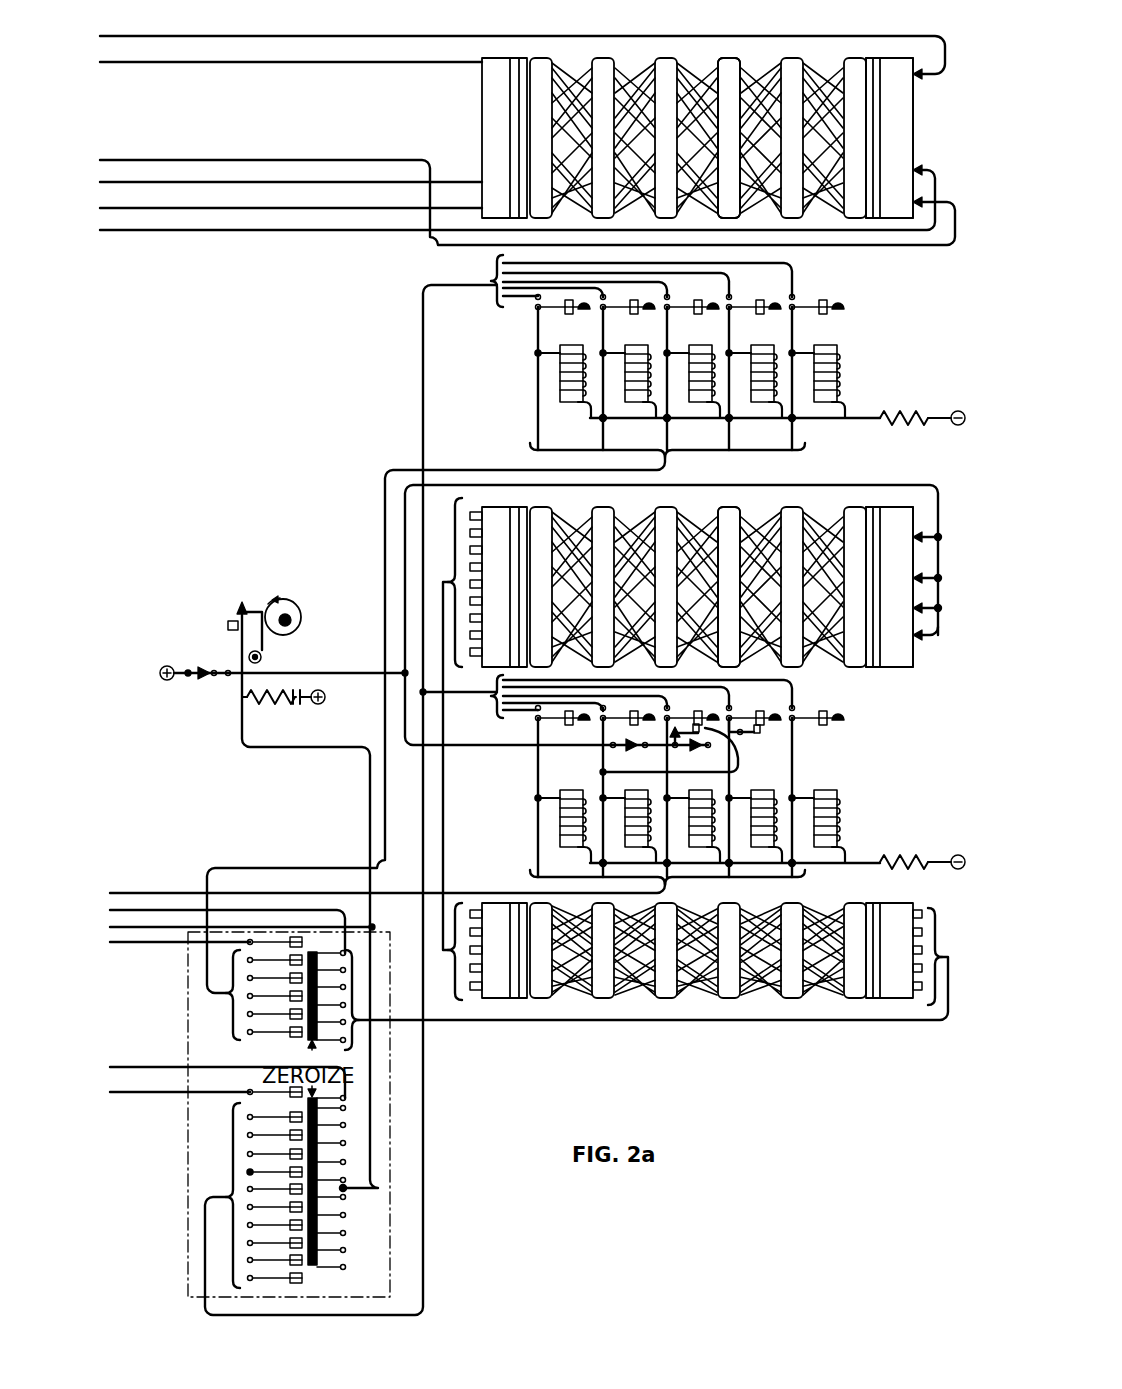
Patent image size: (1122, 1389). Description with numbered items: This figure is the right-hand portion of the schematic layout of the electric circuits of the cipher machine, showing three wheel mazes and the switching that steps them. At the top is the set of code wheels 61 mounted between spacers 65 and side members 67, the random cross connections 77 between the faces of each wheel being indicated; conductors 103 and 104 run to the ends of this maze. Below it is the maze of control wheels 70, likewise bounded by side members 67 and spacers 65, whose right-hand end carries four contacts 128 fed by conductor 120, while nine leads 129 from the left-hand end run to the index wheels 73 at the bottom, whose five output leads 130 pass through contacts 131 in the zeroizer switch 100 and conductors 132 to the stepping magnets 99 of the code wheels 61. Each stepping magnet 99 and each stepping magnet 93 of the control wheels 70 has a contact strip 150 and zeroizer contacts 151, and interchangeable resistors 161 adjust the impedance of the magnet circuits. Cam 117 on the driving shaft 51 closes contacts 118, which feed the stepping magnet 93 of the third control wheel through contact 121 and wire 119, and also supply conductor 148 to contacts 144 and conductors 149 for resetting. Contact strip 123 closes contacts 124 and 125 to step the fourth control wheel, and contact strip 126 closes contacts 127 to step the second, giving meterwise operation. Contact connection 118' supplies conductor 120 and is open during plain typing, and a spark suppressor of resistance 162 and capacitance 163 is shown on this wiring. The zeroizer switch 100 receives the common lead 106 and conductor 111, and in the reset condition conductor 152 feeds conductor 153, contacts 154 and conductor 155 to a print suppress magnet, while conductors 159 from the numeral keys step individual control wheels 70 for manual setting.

The conductors 104 is at (283, 36).
The conductor 103 is at (287, 62).
The random connections of code wheel contacts 77 is at (625, 70).
The spacer 65 is at (728, 68).
The code wheel 61 is at (755, 68).
The side member of basket 67 is at (852, 70).
The zeroizer contacts 151 is at (815, 303).
The contact strip 150 is at (830, 308).
The stepping magnet of code wheel 99 is at (835, 370).
The interchangeable resistor 161 is at (895, 418).
The control wheel 70 is at (760, 505).
The contacts at right hand end of control wheels 128 is at (935, 540).
The cam 117 is at (268, 600).
The contacts 118 is at (212, 637).
The contact connection 118' is at (177, 695).
The conductor 120 is at (405, 625).
The driving shaft 51 is at (276, 638).
The wire 119 is at (316, 673).
The resistance 162 is at (280, 703).
The capacitance 163 is at (297, 705).
The leads from control wheels 129 is at (443, 745).
The contact 121 is at (644, 743).
The contact strip 123 is at (700, 712).
The contacts 124 is at (738, 740).
The contacts 125 is at (708, 747).
The contact strip 126 is at (770, 724).
The contacts 127 is at (775, 732).
The stepping magnet of control wheel 93 is at (820, 796).
The index wheel 73 is at (850, 905).
The output leads 130 is at (727, 1020).
The conductors 149 is at (425, 1175).
The conductor 132 is at (313, 868).
The conductor 148 is at (372, 875).
The conductor 159 is at (455, 893).
The conductor 152 is at (138, 893).
The conductor 111 is at (160, 910).
The common lead 106 is at (134, 945).
The zeroizer switch 100 is at (123, 1067).
The conductor 153 is at (197, 1027).
The conductor 155 is at (175, 1108).
The contacts 131 is at (292, 1003).
The contacts 154 is at (290, 1092).
The contacts 144 is at (288, 1183).